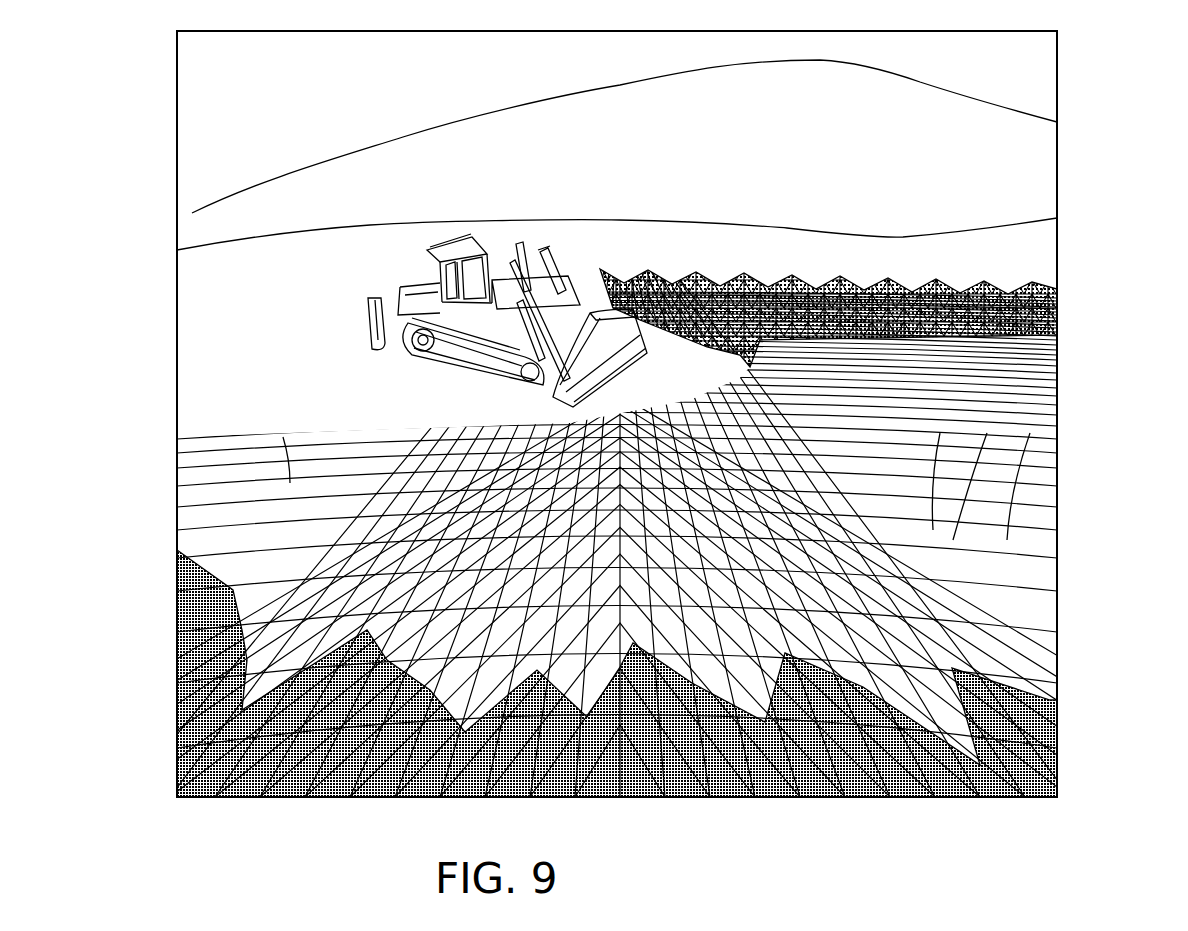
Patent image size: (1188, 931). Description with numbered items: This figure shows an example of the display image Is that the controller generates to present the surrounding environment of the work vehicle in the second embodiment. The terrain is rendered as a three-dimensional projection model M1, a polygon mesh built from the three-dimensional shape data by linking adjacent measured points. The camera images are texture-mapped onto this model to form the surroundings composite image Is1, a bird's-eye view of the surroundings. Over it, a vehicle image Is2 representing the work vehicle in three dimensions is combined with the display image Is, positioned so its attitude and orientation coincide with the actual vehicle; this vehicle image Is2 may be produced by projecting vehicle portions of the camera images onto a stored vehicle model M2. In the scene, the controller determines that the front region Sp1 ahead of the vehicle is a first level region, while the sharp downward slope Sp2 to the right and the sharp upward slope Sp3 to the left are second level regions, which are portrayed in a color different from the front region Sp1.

The display image Is is at (177, 120).
The surroundings composite image Is1 is at (283, 437).
The vehicle image Is2 is at (345, 315).
The three-dimensional projection model M1 is at (178, 520).
The vehicle model M2 is at (480, 375).
The front region Sp1 is at (1057, 433).
The sharp downward slope Sp2 is at (210, 705).
The sharp upward slope Sp3 is at (905, 275).